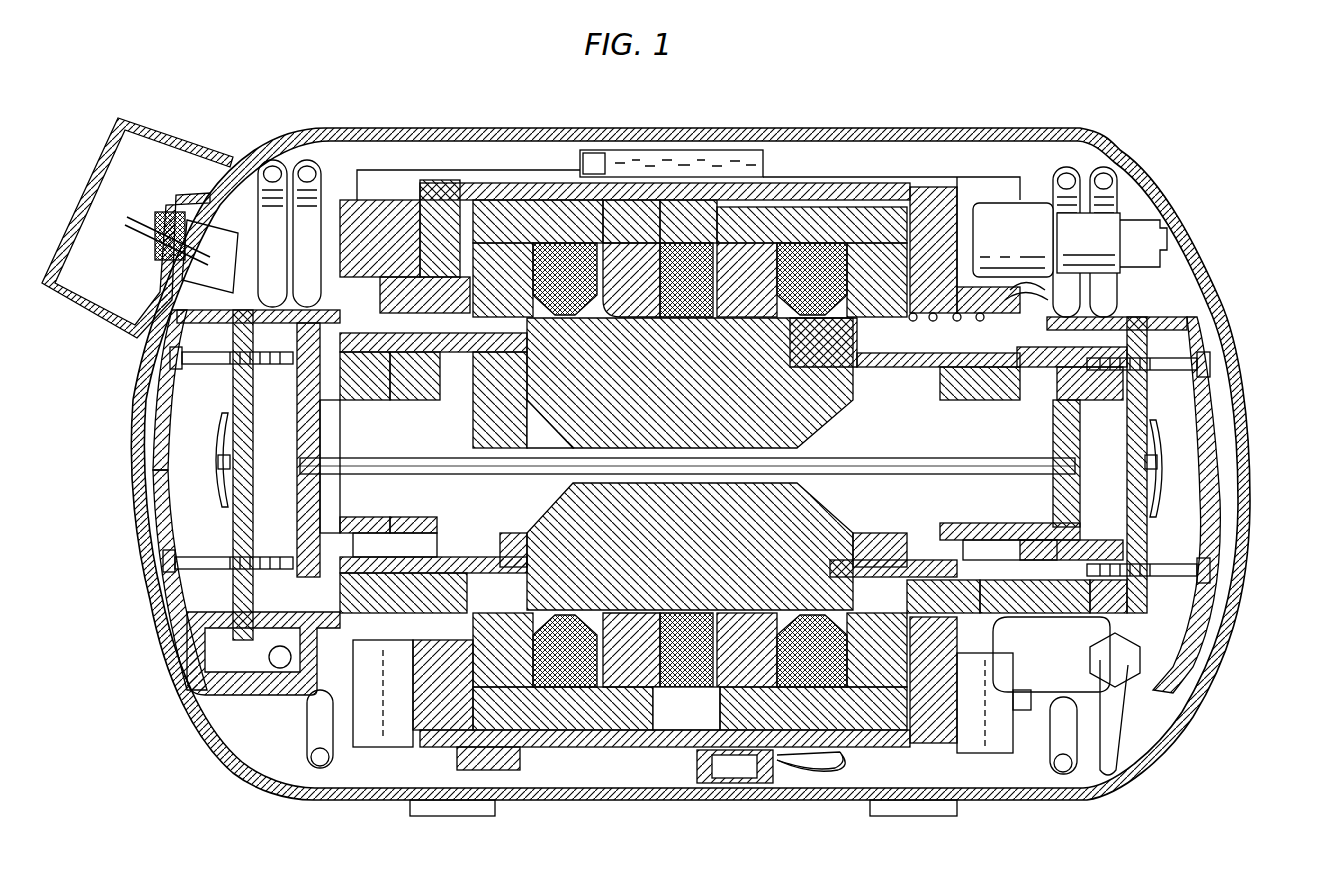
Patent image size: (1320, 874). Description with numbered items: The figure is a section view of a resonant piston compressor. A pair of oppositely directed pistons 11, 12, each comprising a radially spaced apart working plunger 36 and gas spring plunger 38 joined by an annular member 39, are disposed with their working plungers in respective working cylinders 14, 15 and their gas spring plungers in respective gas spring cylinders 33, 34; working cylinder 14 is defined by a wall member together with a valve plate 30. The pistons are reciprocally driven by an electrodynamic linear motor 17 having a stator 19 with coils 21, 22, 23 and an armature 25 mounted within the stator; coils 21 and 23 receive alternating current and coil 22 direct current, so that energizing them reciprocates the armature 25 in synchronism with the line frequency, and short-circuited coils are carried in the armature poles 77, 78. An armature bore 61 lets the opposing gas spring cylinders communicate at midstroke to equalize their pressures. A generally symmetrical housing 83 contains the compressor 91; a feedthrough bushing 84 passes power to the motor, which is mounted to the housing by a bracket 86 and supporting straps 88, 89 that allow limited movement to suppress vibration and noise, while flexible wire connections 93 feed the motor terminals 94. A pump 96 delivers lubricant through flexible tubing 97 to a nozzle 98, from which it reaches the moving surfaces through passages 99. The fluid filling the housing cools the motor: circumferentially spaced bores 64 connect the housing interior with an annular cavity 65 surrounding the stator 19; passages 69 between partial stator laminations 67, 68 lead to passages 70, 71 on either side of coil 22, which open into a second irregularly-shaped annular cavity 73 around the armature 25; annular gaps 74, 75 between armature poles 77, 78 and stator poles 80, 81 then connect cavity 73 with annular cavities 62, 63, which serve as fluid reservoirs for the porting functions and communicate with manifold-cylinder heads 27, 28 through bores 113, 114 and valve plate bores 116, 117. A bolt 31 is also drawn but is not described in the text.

The piston 11 is at (365, 515).
The piston 12 is at (1080, 452).
The working cylinder 14 is at (322, 505).
The working cylinder 15 is at (1095, 500).
The electrodynamic linear motor 17 is at (490, 360).
The stator 19 is at (617, 210).
The coil 21 is at (557, 200).
The coil 22 is at (667, 200).
The coil 23 is at (828, 245).
The armature 25 is at (690, 464).
The manifold-cylinder head 27 is at (158, 410).
The manifold-cylinder head 28 is at (1215, 497).
The valve plate 30 is at (197, 580).
The bolt 31 is at (1165, 562).
The gas spring cylinder 33 is at (437, 533).
The gas spring cylinder 34 is at (1005, 367).
The working plunger 36 is at (297, 433).
The gas spring plunger 38 is at (385, 385).
The annular member 39 is at (933, 535).
The armature bore 61 is at (560, 475).
The annular cavity 62 is at (512, 355).
The annular cavity 63 is at (893, 367).
The bores 64 is at (692, 190).
The annular cavity 65 is at (808, 167).
The partial stator lamination 67 is at (570, 233).
The partial stator lamination 68 is at (887, 217).
The passages 69 is at (700, 220).
The passage 70 is at (625, 695).
The passage 71 is at (700, 705).
The second annular cavity 73 is at (680, 612).
The annular gap 74 is at (620, 612).
The annular gap 75 is at (762, 612).
The armature pole 77 is at (540, 415).
The armature pole 78 is at (830, 400).
The stator pole 80 is at (603, 310).
The stator pole 81 is at (765, 313).
The housing 83 is at (1190, 245).
The feedthrough bushing 84 is at (160, 212).
The bracket 86 is at (720, 160).
The supporting strap 88 is at (360, 300).
The supporting strap 89 is at (1018, 290).
The compressor 91 is at (183, 657).
The flexible wire connections 93 is at (240, 183).
The motor terminals 94 is at (287, 217).
The pump 96 is at (738, 785).
The flexible tubing 97 is at (815, 778).
The nozzle 98 is at (1063, 273).
The passages 99 is at (947, 333).
The bore 113 is at (395, 385).
The bore 114 is at (940, 400).
The valve plate bore 116 is at (230, 325).
The valve plate bore 117 is at (1165, 317).